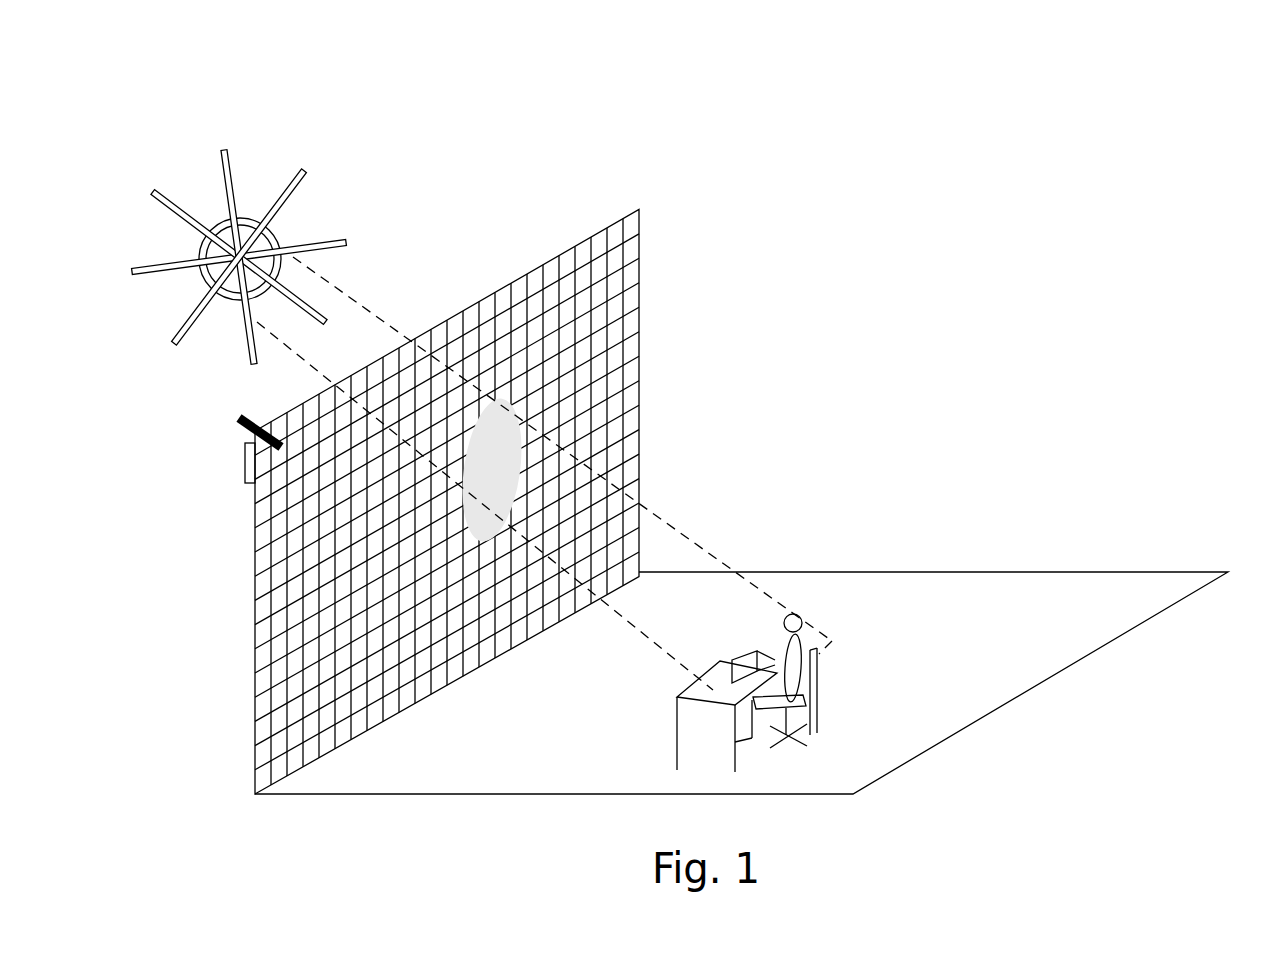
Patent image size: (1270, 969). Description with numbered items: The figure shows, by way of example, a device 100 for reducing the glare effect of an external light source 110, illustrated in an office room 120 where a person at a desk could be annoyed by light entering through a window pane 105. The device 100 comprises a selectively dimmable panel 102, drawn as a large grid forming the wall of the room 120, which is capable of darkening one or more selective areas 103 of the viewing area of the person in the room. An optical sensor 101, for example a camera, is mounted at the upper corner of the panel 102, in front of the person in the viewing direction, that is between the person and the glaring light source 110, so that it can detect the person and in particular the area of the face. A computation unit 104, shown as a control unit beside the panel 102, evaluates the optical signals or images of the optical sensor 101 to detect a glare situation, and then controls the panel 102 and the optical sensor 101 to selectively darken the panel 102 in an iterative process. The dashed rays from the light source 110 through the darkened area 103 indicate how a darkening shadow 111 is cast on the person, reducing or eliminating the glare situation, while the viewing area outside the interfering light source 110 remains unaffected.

The device 100 is at (468, 376).
The external light source 110 is at (217, 270).
The optical sensor 101 is at (237, 420).
The computation unit 104 is at (245, 477).
The selectively dimmable panel 102 is at (510, 465).
The window pane 105 is at (595, 230).
The selective area 103 is at (481, 500).
The office room 120 is at (847, 347).
The darkening shadow 111 is at (725, 606).